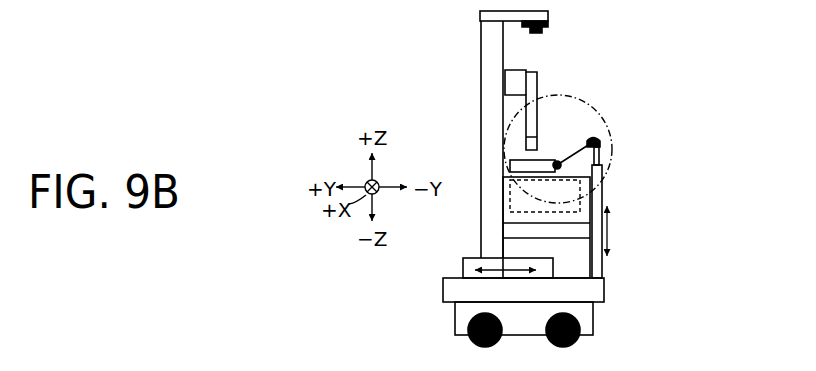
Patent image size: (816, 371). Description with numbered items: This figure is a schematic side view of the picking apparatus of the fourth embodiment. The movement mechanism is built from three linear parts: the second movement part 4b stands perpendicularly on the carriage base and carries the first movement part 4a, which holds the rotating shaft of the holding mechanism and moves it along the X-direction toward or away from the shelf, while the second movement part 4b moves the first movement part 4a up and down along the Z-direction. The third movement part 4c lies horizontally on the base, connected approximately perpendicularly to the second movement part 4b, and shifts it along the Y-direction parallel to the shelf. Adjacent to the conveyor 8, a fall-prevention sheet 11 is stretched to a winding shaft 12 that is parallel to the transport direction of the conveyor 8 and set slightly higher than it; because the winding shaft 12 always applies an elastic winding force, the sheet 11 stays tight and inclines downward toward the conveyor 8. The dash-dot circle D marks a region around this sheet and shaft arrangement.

The first movement part 4a is at (510, 83).
The second movement part 4b is at (488, 116).
The third movement part 4c is at (472, 270).
The conveyor 8 is at (535, 164).
The sheet 11 is at (575, 152).
The winding shaft 12 is at (602, 124).
The movable range D is at (597, 106).